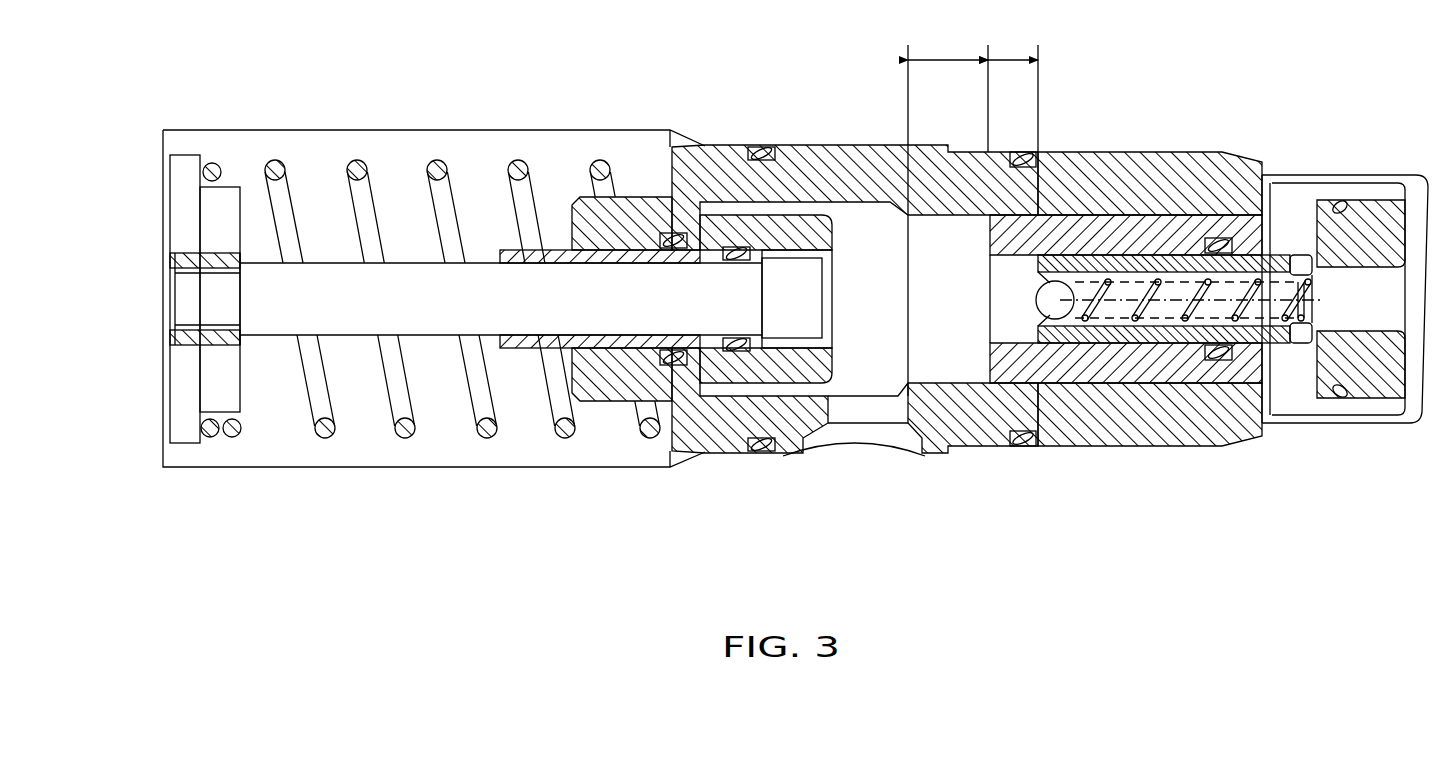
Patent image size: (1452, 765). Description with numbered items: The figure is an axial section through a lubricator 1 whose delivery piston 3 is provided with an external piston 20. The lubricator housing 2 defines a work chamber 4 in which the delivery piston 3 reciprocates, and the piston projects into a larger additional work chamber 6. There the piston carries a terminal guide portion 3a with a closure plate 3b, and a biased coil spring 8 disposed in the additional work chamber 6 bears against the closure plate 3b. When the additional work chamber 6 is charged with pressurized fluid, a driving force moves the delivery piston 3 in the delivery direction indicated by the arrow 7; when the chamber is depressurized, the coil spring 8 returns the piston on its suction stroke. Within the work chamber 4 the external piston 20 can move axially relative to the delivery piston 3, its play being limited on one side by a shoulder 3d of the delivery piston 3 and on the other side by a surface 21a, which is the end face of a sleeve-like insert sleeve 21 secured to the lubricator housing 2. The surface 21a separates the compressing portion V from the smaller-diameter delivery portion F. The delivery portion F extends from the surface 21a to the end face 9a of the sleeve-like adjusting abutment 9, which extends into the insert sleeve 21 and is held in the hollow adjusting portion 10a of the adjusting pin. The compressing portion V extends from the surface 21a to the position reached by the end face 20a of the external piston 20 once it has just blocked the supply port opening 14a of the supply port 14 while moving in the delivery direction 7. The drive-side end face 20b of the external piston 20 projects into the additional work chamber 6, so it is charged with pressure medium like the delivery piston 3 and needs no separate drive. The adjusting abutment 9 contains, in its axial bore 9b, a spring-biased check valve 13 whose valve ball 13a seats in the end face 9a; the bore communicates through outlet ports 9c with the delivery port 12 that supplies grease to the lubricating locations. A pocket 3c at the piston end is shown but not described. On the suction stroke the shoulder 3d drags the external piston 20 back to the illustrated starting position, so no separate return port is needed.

The lubricator 1 is at (425, 548).
The lubricator housing 2 is at (732, 183).
The delivery piston 3 is at (190, 312).
The terminal guide portion 3a is at (222, 198).
The closure plate 3b is at (183, 400).
The piston pocket 3c is at (810, 313).
The shoulder 3d is at (812, 243).
The work chamber 4 is at (808, 390).
The additional work chamber 6 is at (300, 150).
The delivery direction 7 is at (432, 298).
The coil spring 8 is at (325, 438).
The adjusting abutment 9 is at (1100, 262).
The end face 9a is at (1040, 283).
The axial bore 9b is at (1155, 280).
The outlet ports 9c is at (1298, 258).
The hollow adjusting portion 10a is at (1385, 190).
The delivery port 12 is at (1290, 407).
The check valve 13 is at (1180, 300).
The valve ball 13a is at (1052, 318).
The supply port 14 is at (845, 433).
The supply port opening 14a is at (872, 408).
The external piston 20 is at (740, 377).
The end face 20a is at (837, 243).
The drive-side end face 20b is at (500, 240).
The insert sleeve 21 is at (1112, 370).
The surface 21a is at (988, 362).
The compressing portion V is at (935, 60).
The delivery portion F is at (1012, 60).